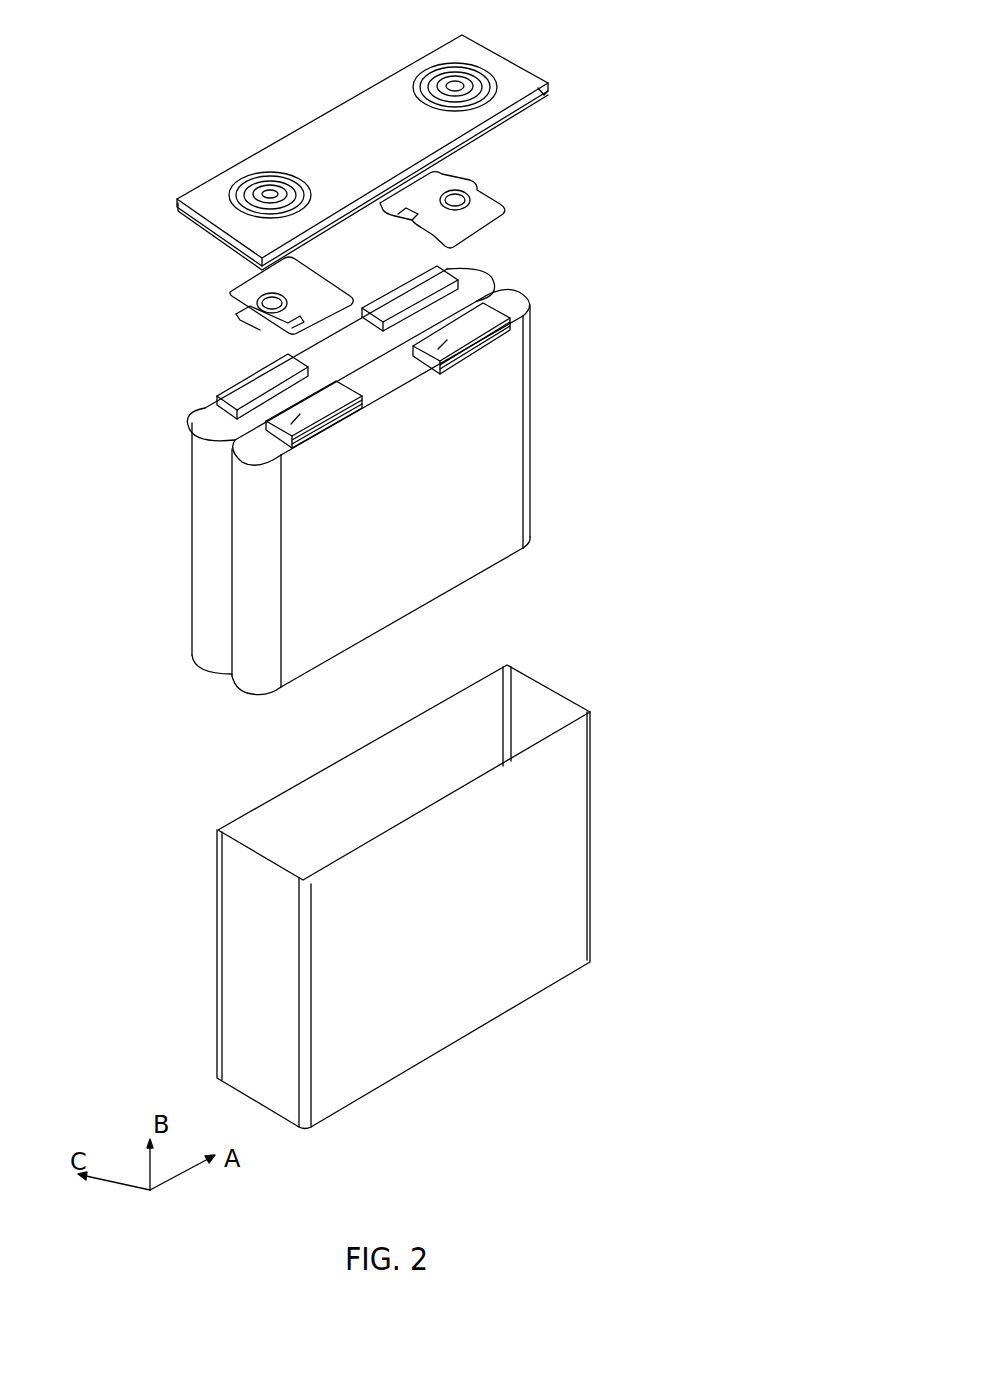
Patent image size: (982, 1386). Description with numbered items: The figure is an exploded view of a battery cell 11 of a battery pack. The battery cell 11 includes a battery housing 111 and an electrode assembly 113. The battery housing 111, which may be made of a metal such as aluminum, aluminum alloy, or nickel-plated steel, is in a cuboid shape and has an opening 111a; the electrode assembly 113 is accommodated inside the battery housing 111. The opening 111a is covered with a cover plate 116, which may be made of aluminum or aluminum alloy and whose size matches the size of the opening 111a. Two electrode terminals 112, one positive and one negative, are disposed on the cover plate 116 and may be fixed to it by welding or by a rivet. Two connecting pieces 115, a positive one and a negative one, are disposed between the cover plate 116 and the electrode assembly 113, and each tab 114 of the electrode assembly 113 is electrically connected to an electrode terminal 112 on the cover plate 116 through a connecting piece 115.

The battery cell 11 is at (724, 543).
The battery housing 111 is at (570, 817).
The opening 111a is at (457, 742).
The electrode terminal 112 is at (413, 88).
The electrode assembly 113 is at (503, 430).
The tab 114 is at (483, 313).
The connecting piece 115 is at (497, 195).
The cover plate 116 is at (333, 142).